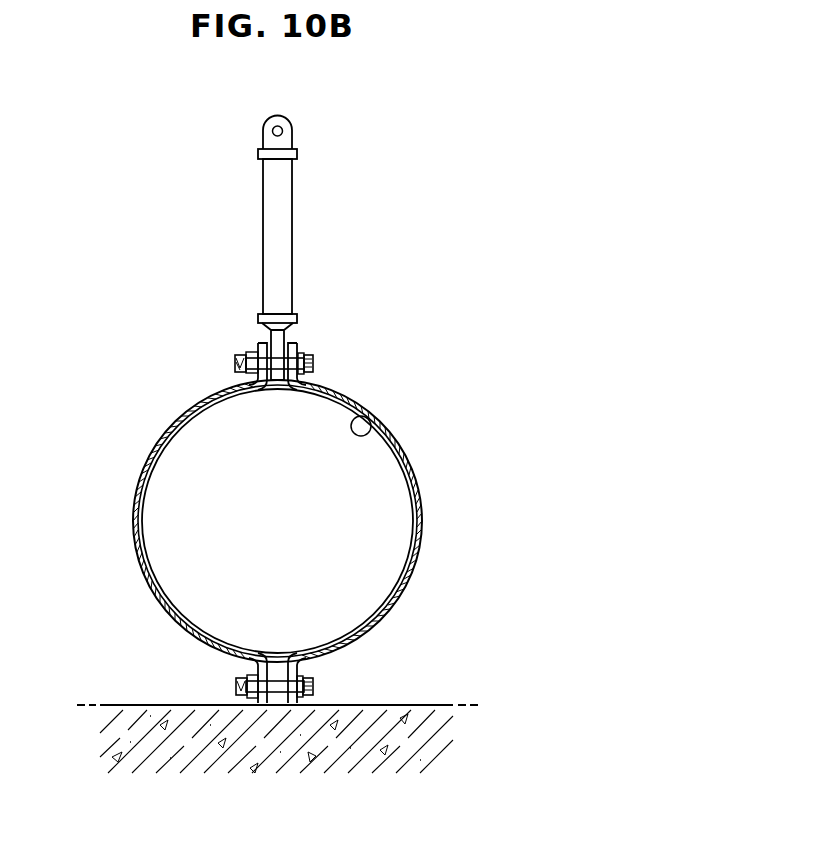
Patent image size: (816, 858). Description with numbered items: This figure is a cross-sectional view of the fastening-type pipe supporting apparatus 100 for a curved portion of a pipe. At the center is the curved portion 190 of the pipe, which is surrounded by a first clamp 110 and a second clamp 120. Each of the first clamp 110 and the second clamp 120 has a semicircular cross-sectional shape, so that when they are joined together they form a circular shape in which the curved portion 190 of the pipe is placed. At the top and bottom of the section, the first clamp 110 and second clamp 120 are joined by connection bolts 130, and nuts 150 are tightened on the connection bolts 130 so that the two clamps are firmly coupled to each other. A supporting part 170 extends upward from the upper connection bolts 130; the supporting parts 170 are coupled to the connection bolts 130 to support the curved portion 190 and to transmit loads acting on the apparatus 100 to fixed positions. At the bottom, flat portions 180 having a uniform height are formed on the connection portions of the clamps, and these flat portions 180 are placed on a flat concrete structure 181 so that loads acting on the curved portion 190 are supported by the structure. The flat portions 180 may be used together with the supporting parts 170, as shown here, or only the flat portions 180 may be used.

The fastening-type pipe supporting apparatus 100 is at (138, 335).
The first clamp 110 is at (425, 527).
The second clamp 120 is at (137, 523).
The connection bolts 130 is at (312, 358).
The nuts 150 is at (250, 356).
The supporting parts 170 is at (288, 236).
The flat portion 180 is at (293, 706).
The flat concrete structure 181 is at (419, 706).
The curved portion 190 is at (380, 427).